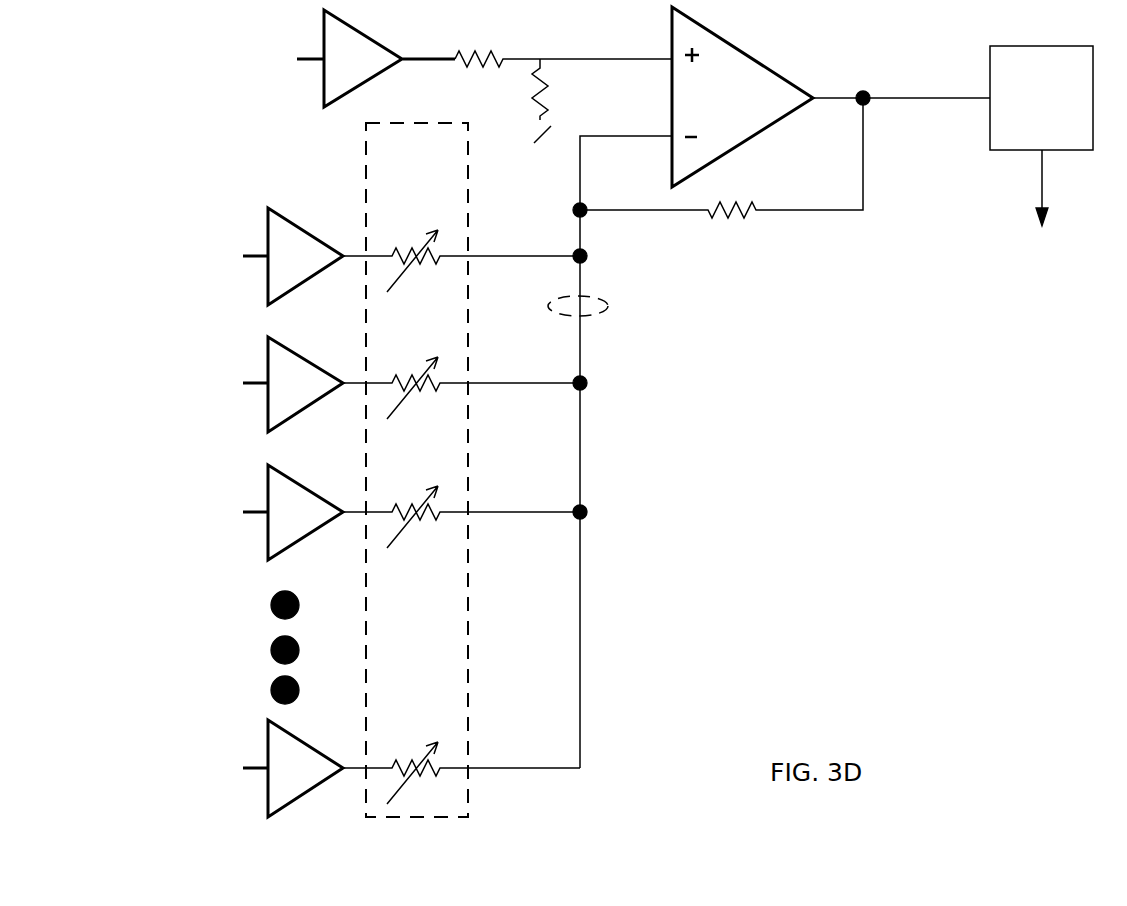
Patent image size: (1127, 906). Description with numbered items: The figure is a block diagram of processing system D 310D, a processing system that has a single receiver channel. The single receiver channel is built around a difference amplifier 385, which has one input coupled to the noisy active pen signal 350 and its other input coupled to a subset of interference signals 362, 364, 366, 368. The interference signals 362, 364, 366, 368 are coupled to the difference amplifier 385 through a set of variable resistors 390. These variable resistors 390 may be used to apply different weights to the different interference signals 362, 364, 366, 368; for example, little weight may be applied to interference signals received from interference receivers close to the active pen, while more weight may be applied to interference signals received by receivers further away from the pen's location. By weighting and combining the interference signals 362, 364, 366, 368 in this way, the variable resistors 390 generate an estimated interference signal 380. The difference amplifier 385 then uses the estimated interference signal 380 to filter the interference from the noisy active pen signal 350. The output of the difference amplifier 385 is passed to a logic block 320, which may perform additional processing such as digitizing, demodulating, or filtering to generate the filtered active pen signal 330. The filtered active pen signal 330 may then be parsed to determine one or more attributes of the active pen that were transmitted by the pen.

The noisy active pen signal 350 is at (327, 58).
The difference amplifier 385 is at (831, 97).
The logic block 320 is at (1041, 98).
The filtered active pen signal 330 is at (1045, 224).
The set of variable resistors 390 is at (461, 470).
The interference signal 362 is at (237, 256).
The interference signal 364 is at (237, 384).
The interference signal 366 is at (237, 512).
The interference signal 368 is at (237, 768).
The estimated interference signal 380 is at (613, 305).
The processing system D 310D is at (892, 570).